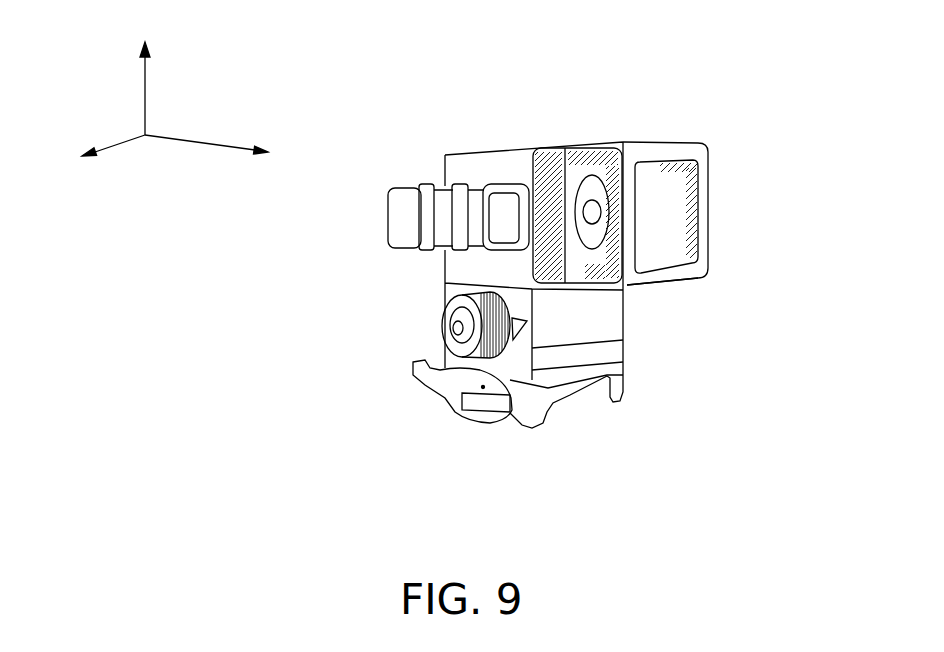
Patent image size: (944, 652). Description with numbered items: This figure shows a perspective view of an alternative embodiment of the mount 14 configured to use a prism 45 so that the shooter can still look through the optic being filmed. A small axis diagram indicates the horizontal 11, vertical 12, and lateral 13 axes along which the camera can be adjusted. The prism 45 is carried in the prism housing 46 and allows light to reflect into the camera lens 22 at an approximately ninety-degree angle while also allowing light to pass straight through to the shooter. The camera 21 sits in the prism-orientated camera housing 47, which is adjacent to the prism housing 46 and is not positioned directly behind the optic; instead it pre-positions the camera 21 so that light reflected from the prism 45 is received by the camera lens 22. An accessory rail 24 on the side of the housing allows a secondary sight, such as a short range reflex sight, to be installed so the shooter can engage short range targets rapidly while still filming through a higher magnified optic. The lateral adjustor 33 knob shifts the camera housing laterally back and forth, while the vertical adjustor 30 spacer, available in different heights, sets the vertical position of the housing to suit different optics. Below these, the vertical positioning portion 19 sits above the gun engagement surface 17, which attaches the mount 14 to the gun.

The horizontal axis 11 is at (220, 149).
The vertical axis 12 is at (145, 75).
The lateral axis 13 is at (97, 152).
The mount 14 is at (446, 290).
The gun engagement surface 17 is at (627, 387).
The vertical positioning portion 19 is at (627, 363).
The camera 21 is at (648, 187).
The camera lens 22 is at (600, 207).
The accessory rail 24 is at (409, 188).
The vertical adjustor spacer 30 is at (627, 343).
The lateral adjustor knob 33 is at (483, 328).
The prism 45 is at (563, 148).
The prism housing 46 is at (560, 286).
The prism-orientated camera housing 47 is at (672, 277).